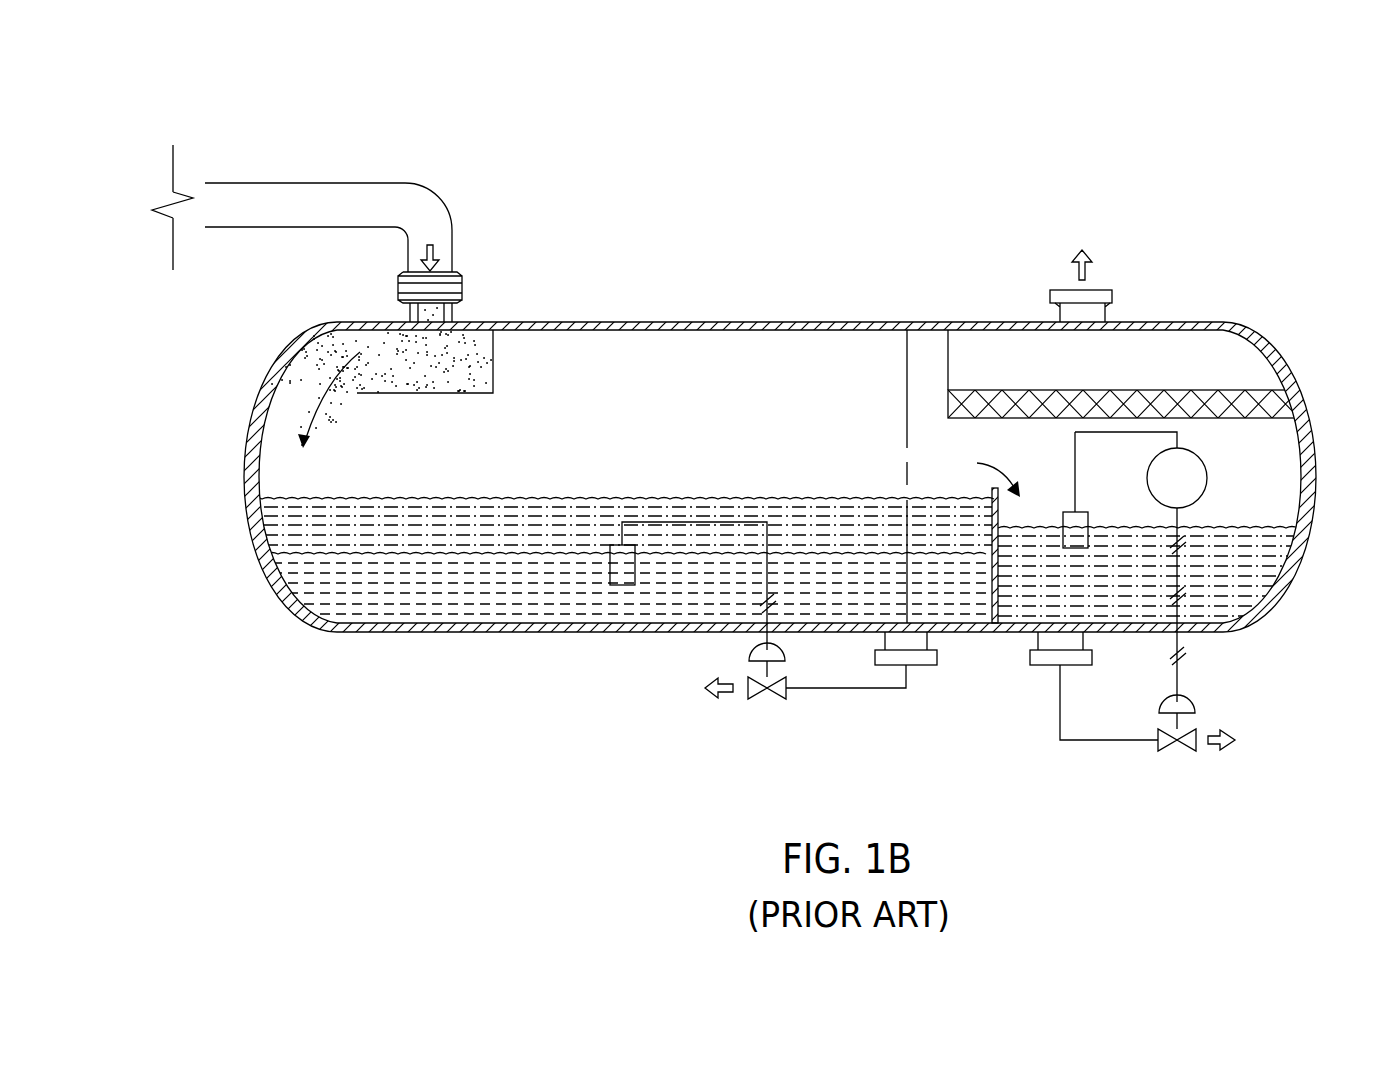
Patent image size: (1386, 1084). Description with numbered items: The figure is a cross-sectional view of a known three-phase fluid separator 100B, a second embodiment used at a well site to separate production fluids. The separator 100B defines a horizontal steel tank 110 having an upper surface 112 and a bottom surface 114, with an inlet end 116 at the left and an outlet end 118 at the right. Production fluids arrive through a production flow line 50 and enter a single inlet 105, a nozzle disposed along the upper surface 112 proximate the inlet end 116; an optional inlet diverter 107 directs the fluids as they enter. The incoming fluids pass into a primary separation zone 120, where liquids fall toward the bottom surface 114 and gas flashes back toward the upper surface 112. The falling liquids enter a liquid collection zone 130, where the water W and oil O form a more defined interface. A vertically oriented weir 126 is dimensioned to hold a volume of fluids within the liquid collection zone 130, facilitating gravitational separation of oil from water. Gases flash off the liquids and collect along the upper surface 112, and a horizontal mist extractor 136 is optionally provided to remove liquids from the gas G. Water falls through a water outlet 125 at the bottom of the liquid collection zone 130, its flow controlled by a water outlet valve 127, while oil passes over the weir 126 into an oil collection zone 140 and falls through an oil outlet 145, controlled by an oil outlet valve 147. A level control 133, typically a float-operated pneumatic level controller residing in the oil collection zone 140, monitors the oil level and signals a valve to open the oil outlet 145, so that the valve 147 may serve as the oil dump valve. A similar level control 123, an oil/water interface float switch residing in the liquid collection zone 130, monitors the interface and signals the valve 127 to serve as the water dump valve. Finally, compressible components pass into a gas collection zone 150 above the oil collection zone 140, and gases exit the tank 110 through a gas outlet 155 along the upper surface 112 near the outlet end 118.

The three-phase fluid separator 100B is at (125, 95).
The production flow line 50 is at (302, 183).
The inlet 105 is at (462, 285).
The inlet diverter 107 is at (493, 358).
The tank 110 is at (247, 473).
The upper surface 112 is at (683, 322).
The bottom surface 114 is at (425, 632).
The inlet end 116 is at (275, 546).
The outlet end 118 is at (1327, 476).
The primary separation zone 120 is at (592, 465).
The level control 123 is at (737, 522).
The water outlet 125 is at (918, 667).
The weir 126 is at (988, 600).
The water outlet valve 127 is at (763, 699).
The liquid collection zone 130 is at (850, 372).
The level control 133 is at (1208, 478).
The mist extractor 136 is at (1001, 390).
The oil collection zone 140 is at (1263, 558).
The oil outlet 145 is at (1087, 667).
The oil outlet valve 147 is at (1165, 755).
The gas collection zone 150 is at (1248, 360).
The gas outlet 155 is at (1114, 296).
The gas G is at (610, 357).
The oil O is at (474, 527).
The water W is at (622, 602).